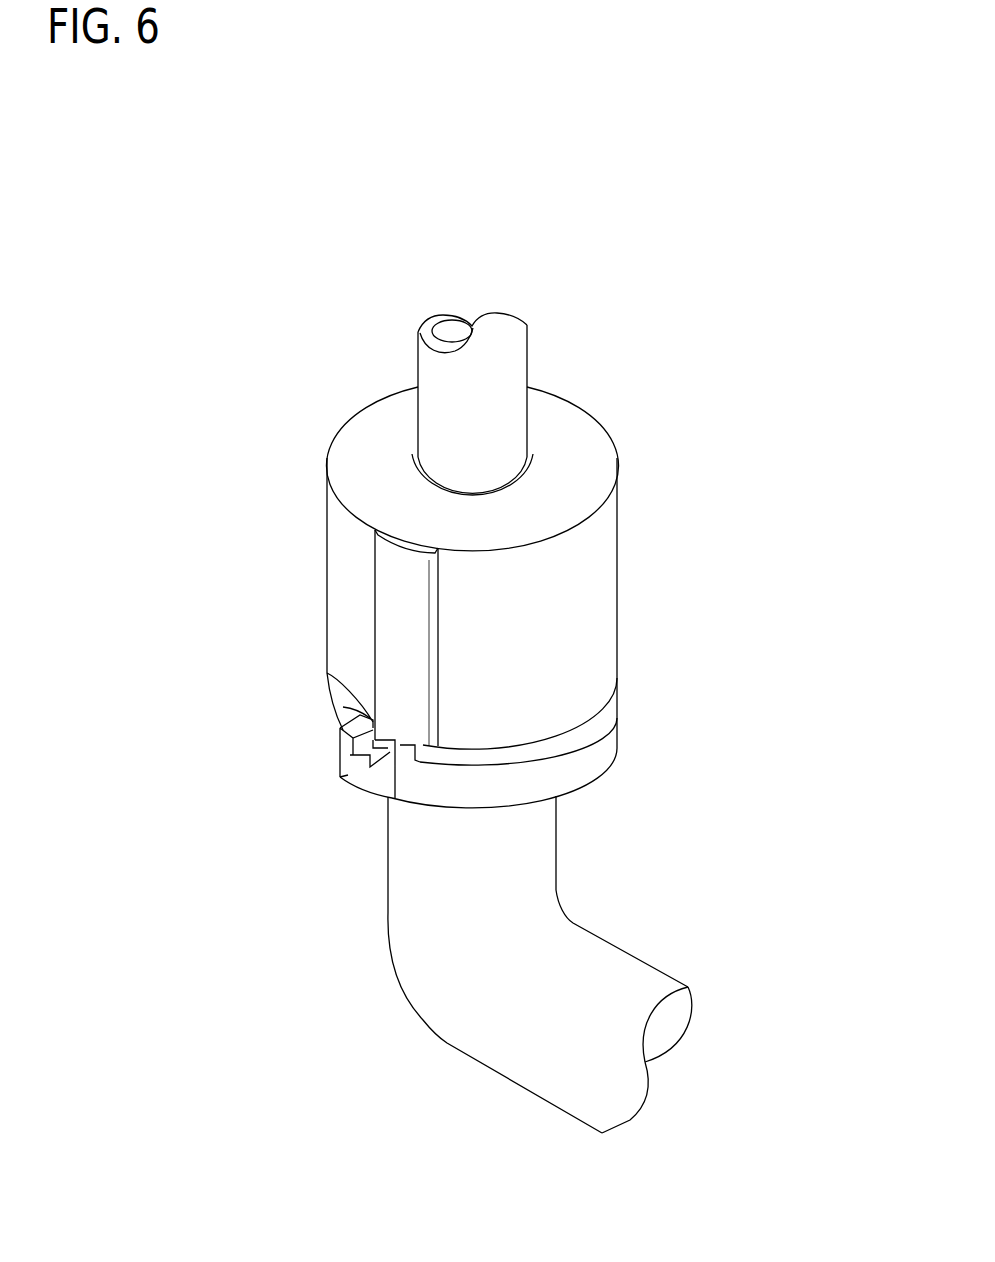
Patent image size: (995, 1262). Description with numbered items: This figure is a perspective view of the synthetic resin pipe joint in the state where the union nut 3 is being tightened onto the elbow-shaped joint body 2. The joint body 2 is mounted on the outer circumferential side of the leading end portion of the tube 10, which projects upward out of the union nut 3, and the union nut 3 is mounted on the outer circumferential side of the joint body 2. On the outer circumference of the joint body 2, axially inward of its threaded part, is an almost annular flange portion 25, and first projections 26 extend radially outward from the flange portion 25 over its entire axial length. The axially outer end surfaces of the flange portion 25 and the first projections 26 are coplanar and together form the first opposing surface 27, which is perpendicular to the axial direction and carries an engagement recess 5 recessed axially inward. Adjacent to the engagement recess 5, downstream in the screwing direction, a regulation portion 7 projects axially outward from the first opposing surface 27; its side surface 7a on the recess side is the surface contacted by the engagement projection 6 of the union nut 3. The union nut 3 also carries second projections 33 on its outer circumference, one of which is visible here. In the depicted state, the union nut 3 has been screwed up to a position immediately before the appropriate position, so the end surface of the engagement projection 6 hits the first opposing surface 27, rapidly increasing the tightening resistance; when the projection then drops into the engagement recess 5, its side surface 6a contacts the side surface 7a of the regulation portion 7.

The joint body 2 is at (546, 852).
The union nut 3 is at (619, 574).
The engagement recess 5 is at (343, 773).
The engagement projection 6 is at (396, 760).
The side surface 6a is at (340, 753).
The regulation portion 7 is at (343, 743).
The side surface 7a is at (343, 707).
The tube 10 is at (513, 352).
The flange portion 25 is at (577, 763).
The first projection 26 is at (368, 777).
The first opposing surface 27 is at (580, 728).
The second projection 33 is at (395, 595).